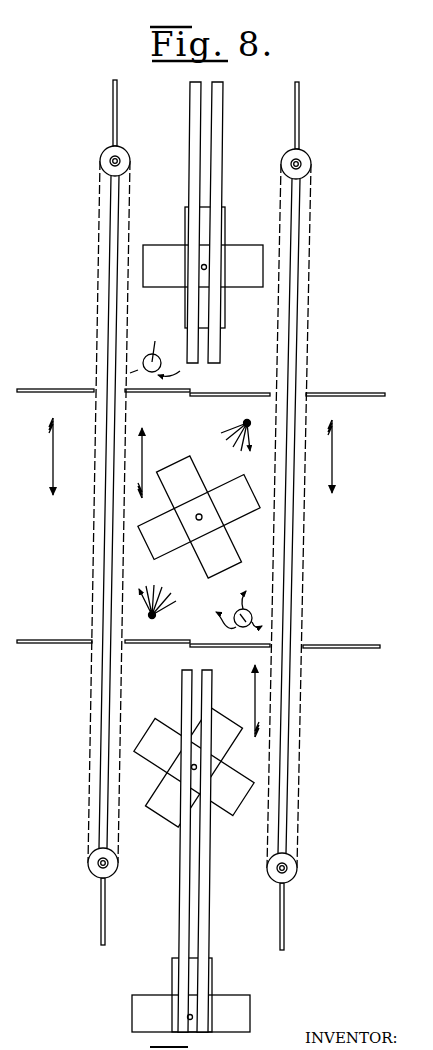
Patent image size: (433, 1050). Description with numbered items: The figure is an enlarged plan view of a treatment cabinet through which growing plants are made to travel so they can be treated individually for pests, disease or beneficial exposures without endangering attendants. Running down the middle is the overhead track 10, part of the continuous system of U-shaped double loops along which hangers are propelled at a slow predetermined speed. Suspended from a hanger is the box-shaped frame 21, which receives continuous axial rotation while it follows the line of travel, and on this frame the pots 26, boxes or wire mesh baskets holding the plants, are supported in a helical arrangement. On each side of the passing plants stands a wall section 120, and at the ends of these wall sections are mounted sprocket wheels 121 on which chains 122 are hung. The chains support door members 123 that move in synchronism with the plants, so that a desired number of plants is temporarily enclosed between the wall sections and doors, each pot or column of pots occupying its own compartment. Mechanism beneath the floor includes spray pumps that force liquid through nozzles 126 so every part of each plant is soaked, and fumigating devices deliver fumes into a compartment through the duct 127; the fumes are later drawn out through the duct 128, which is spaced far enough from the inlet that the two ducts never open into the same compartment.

The track 10 is at (222, 149).
The box-shaped frame 21 is at (200, 505).
The pots 26 is at (203, 267).
The wall section 120 is at (107, 538).
The sprocket wheels 121 is at (104, 168).
The chains 122 is at (93, 742).
The door member 123 is at (30, 389).
The nozzles 126 is at (243, 423).
The duct 127 is at (252, 617).
The duct 128 is at (146, 358).